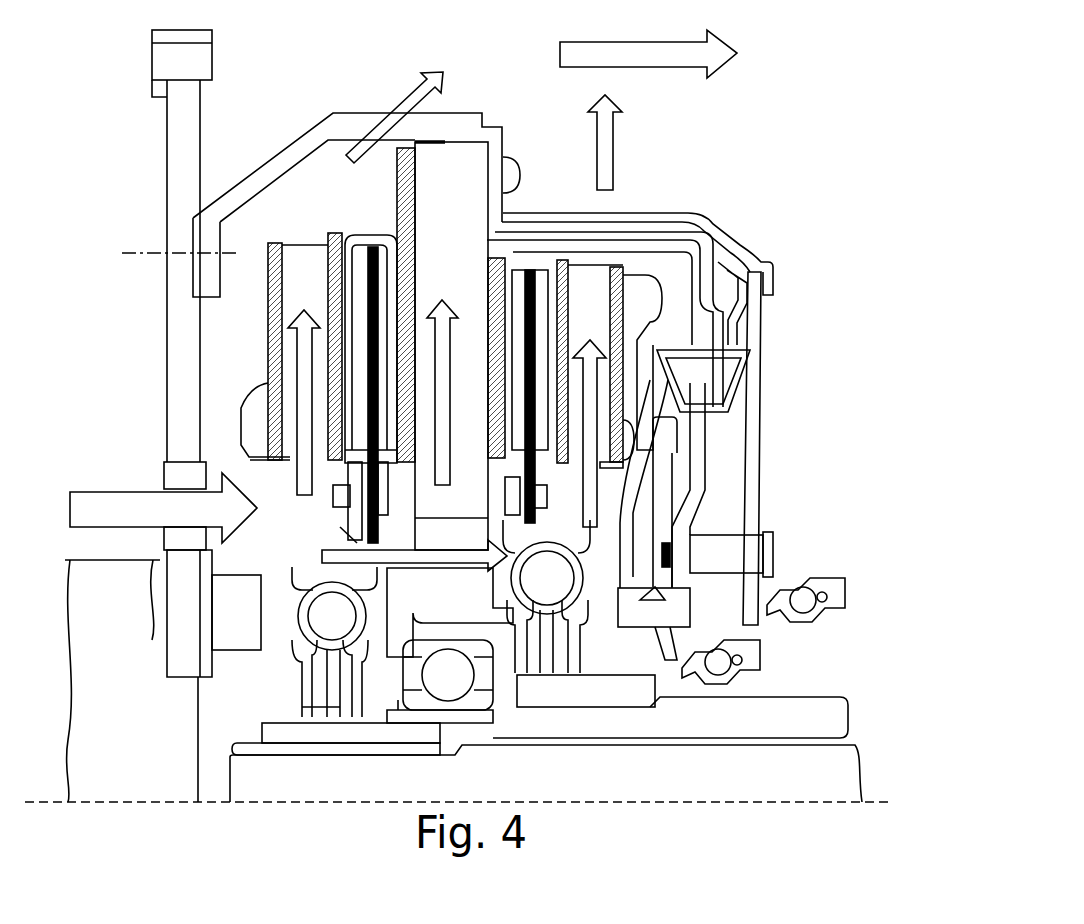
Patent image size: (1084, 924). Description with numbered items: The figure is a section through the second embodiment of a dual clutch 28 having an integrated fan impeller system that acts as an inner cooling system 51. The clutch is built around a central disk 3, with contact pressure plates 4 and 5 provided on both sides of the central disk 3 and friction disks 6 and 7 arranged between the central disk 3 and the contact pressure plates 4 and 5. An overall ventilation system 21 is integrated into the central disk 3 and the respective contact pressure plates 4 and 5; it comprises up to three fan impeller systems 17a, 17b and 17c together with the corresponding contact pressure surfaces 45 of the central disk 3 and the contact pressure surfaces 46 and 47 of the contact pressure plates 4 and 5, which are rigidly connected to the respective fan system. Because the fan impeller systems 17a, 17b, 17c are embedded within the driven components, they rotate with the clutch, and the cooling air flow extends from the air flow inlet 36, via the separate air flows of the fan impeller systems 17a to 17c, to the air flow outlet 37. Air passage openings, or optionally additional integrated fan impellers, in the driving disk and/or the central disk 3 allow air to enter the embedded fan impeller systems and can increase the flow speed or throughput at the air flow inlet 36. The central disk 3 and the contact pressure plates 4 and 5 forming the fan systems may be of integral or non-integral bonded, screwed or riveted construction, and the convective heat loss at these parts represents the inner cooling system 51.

The central disk 3 is at (487, 163).
The contact pressure plate 4 is at (325, 273).
The contact pressure plate 5 is at (568, 283).
The friction disk 6 is at (358, 333).
The friction disk 7 is at (532, 316).
The fan impeller system 17a is at (623, 407).
The fan impeller system 17b is at (480, 240).
The fan impeller system 17c is at (318, 458).
The ventilation system 21 is at (482, 408).
The dual clutch 28 is at (685, 212).
The air flow inlet 36 is at (97, 503).
The air flow outlet 37 is at (738, 52).
The contact pressure surfaces 45 is at (418, 290).
The contact pressure surface 46 is at (335, 258).
The contact pressure surface 47 is at (623, 300).
The inner cooling system 51 is at (152, 482).